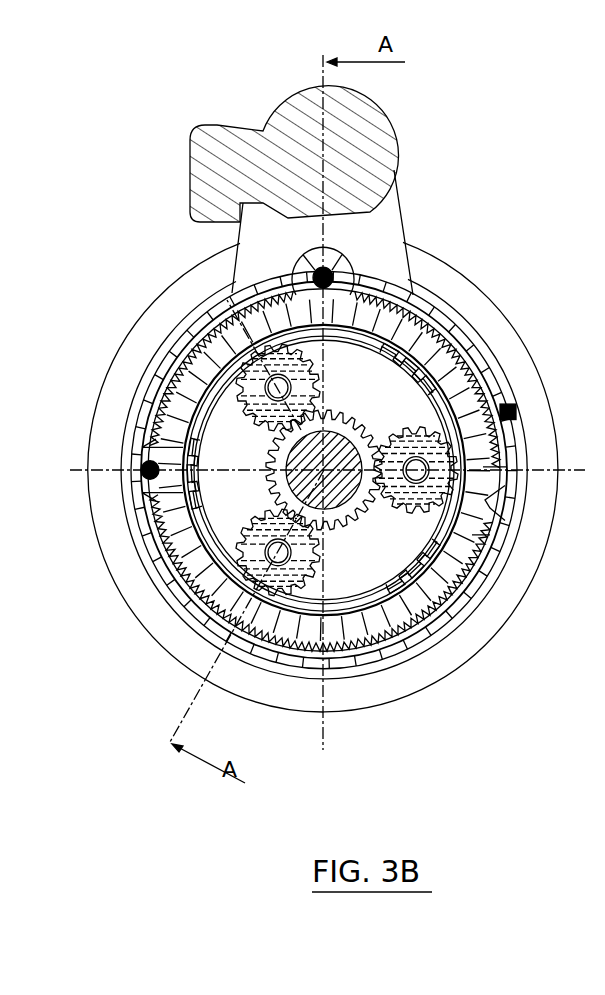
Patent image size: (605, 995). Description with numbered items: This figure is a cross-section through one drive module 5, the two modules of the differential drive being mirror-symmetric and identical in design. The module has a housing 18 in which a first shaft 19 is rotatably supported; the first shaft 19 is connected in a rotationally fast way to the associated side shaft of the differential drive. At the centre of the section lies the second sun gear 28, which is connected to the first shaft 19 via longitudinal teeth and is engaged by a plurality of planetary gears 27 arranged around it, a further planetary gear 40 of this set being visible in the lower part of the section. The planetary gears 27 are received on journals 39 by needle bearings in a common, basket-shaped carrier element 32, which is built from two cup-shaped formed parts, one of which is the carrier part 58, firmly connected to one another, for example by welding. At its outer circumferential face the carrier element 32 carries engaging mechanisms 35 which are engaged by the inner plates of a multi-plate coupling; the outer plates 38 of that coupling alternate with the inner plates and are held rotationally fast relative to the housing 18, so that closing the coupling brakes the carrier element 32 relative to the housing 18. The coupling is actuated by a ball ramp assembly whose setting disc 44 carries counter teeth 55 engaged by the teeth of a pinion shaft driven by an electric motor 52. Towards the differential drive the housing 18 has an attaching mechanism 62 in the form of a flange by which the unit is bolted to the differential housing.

The drive module 5 is at (143, 106).
The housing 18 is at (216, 318).
The first shaft 19 is at (338, 495).
The planetary gear 27 is at (320, 385).
The second sun gear 28 is at (343, 422).
The carrier element 32 is at (463, 407).
The engaging mechanism 35 is at (418, 572).
The outer plate 38 is at (485, 397).
The journal 39 is at (404, 508).
The planet gear 40 is at (312, 572).
The setting disc 44 is at (443, 388).
The electric motor 52 is at (375, 130).
The counter teeth 55 is at (418, 322).
The cup-shaped carrier part 58 is at (324, 470).
The attaching mechanism 62 is at (527, 573).